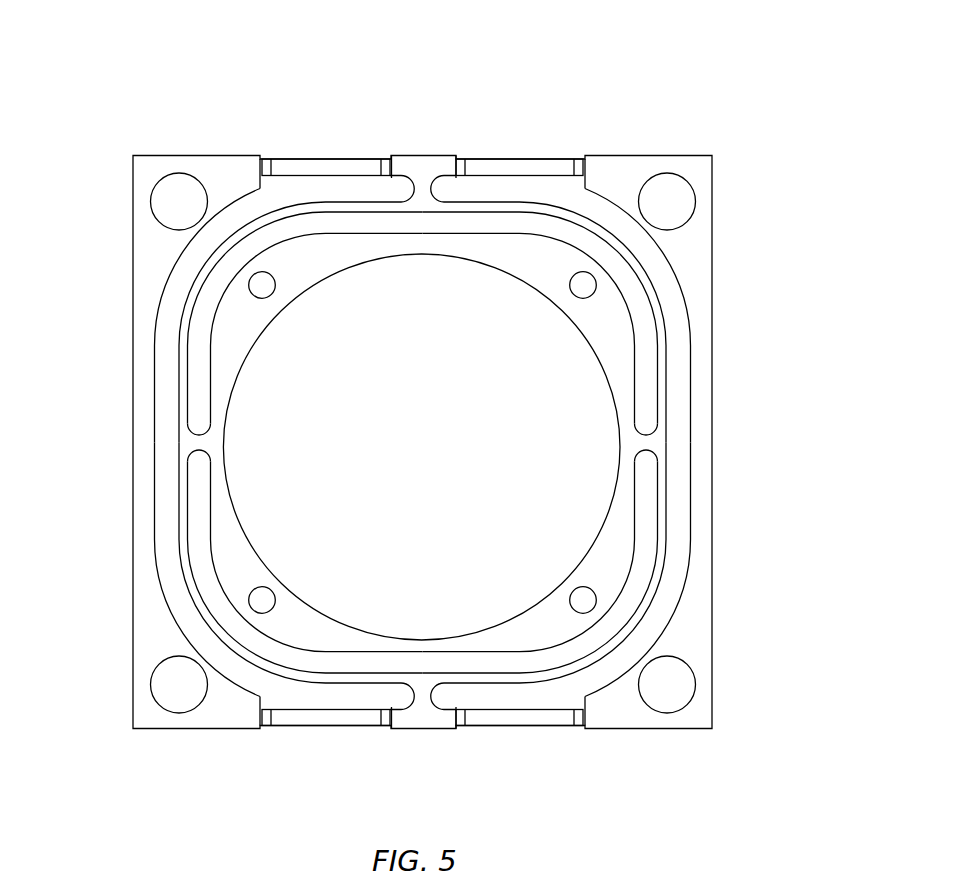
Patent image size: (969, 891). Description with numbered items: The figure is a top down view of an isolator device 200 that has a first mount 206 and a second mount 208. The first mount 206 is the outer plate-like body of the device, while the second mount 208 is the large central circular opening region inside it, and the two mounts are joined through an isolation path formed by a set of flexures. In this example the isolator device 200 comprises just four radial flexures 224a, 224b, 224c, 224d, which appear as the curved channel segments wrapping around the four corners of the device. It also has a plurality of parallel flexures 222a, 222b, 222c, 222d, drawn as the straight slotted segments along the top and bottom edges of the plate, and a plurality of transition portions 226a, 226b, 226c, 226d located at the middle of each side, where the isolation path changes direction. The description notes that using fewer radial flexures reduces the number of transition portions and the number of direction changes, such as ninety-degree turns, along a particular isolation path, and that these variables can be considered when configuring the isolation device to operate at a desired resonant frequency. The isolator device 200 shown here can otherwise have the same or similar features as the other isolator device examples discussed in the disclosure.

The isolator device 200 is at (660, 78).
The first mount 206 is at (702, 342).
The second mount 208 is at (558, 295).
The parallel flexure 222a is at (322, 718).
The parallel flexure 222b is at (530, 722).
The parallel flexure 222c is at (340, 160).
The parallel flexure 222d is at (513, 165).
The radial flexure 224a is at (190, 602).
The radial flexure 224b is at (653, 562).
The radial flexure 224c is at (193, 296).
The radial flexure 224d is at (642, 270).
The transition portion 226a is at (423, 700).
The transition portion 226b is at (197, 442).
The transition portion 226c is at (423, 168).
The transition portion 226d is at (660, 443).